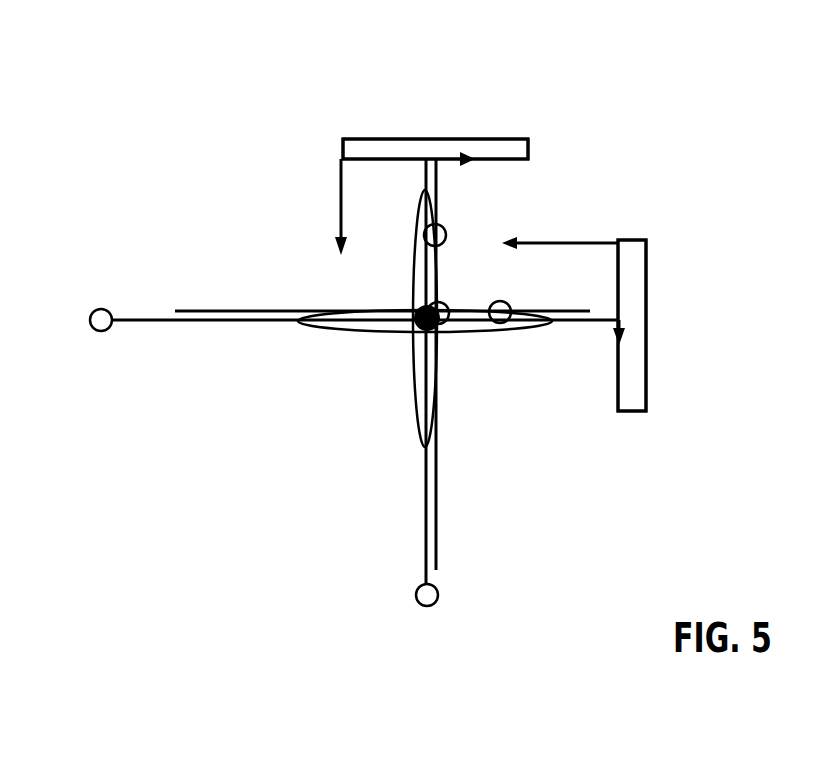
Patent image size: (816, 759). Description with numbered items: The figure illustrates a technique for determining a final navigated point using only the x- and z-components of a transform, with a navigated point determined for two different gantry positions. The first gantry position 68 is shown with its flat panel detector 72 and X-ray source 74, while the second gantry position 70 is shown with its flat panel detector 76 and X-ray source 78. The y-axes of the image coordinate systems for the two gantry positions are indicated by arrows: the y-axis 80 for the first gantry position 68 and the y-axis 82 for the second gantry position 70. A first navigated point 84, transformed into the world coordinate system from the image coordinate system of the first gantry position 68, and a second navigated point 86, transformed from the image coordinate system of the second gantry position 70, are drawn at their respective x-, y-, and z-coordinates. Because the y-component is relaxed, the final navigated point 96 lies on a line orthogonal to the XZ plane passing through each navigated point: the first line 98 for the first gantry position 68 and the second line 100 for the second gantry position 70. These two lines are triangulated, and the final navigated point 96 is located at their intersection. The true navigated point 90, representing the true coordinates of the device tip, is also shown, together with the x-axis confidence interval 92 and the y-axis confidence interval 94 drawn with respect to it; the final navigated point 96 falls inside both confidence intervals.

The first gantry position 68 is at (387, 130).
The second gantry position 70 is at (654, 291).
The flat panel detector 72 is at (510, 139).
The X-ray source 74 is at (432, 582).
The flat panel detector 76 is at (648, 381).
The X-ray source 78 is at (102, 308).
The y-axis 80 is at (341, 203).
The y-axis 82 is at (595, 240).
The first navigated point 84 is at (442, 224).
The second navigated point 86 is at (506, 302).
The true navigated point 90 is at (418, 308).
The x-axis confidence interval 92 is at (331, 330).
The y-axis confidence interval 94 is at (438, 385).
The final navigated point 96 is at (445, 302).
The first line 98 is at (437, 533).
The second line 100 is at (207, 310).